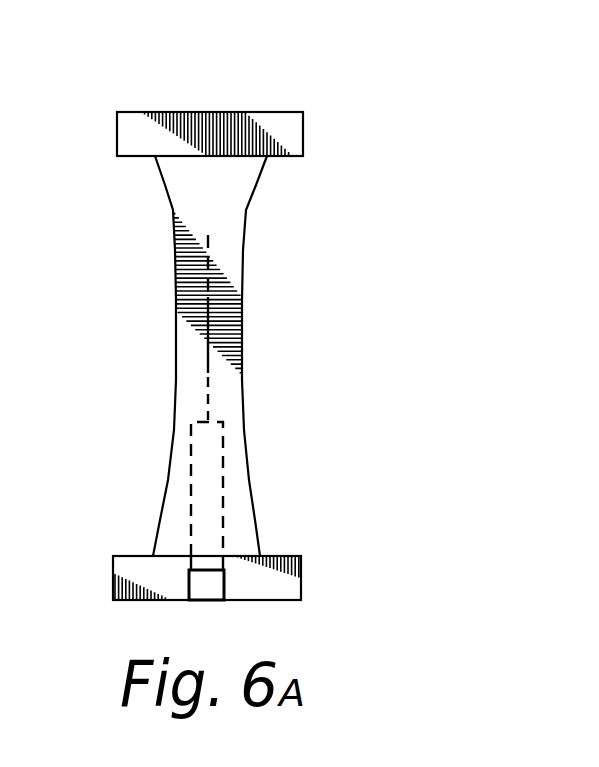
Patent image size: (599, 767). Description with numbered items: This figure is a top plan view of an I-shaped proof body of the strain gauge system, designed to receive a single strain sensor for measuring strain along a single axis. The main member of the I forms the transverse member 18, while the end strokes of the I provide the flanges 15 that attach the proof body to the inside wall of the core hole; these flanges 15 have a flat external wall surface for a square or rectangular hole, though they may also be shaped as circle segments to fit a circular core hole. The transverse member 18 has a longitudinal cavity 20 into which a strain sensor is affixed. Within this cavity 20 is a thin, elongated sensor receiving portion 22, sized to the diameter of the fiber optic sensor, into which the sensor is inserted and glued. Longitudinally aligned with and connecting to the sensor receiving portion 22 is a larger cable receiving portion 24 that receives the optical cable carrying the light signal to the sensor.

The flange 15 is at (274, 111).
The transverse member 18 is at (243, 348).
The sensor receiving portion 22 is at (207, 370).
The cable receiving portion 24 is at (223, 462).
The longitudinal cavity 20 is at (190, 508).